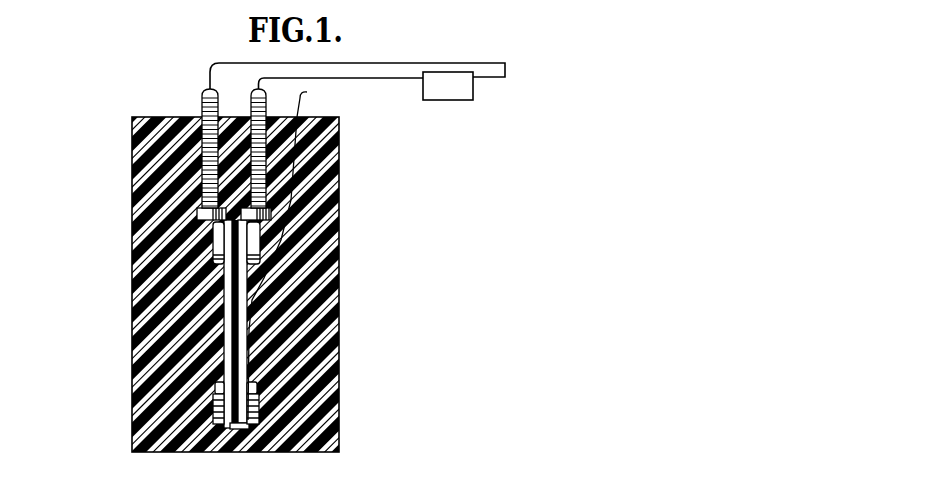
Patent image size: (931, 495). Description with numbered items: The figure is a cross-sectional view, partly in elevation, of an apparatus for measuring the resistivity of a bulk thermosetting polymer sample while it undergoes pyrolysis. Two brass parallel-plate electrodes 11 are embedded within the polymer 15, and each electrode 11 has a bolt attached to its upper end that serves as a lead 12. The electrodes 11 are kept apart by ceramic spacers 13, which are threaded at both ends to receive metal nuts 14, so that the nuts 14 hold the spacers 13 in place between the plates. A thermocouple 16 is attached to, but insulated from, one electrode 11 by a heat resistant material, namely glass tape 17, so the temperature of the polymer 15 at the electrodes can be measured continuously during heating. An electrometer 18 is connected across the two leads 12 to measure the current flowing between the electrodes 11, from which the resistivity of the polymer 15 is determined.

The parallel-plate electrode 11 is at (250, 427).
The lead 12 is at (206, 88).
The ceramic spacer 13 is at (230, 246).
The metal nut 14 is at (214, 245).
The polymer 15 is at (340, 211).
The thermocouple 16 is at (304, 103).
The glass tape 17 is at (250, 332).
The electrometer 18 is at (447, 100).